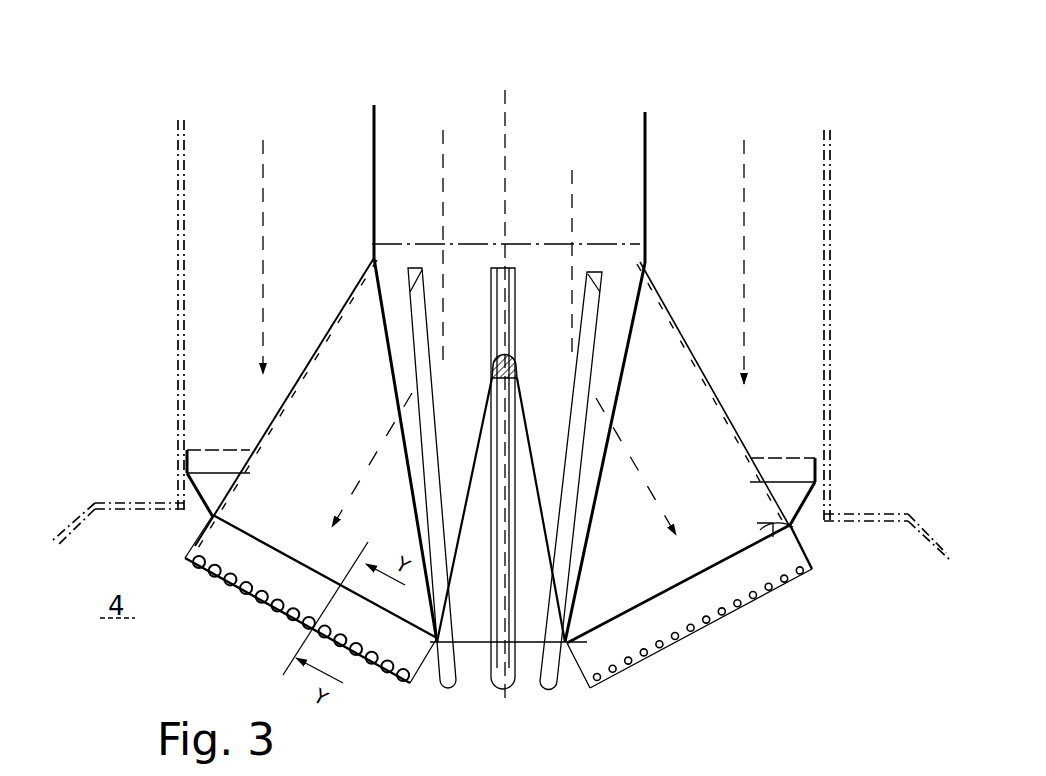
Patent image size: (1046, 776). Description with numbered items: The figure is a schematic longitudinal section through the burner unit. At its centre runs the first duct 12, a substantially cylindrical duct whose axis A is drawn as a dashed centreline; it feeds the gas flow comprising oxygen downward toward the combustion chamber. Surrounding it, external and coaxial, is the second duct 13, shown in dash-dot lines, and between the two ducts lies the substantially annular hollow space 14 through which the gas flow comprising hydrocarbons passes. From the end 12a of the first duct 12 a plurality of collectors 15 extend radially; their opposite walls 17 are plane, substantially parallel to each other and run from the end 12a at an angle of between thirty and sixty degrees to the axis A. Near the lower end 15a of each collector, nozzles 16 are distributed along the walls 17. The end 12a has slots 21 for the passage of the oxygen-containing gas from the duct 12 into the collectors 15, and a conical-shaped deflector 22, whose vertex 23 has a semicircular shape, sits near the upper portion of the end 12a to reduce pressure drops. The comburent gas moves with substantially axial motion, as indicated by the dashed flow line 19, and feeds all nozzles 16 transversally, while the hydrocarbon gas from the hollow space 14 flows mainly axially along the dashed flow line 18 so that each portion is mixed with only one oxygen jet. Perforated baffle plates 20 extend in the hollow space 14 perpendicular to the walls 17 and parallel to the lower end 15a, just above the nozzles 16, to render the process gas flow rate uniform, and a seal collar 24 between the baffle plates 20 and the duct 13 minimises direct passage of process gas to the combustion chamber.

The first duct 12 is at (648, 200).
The end of the first duct 12a is at (374, 258).
The second duct 13 is at (831, 222).
The annular hollow space 14 is at (228, 240).
The collectors 15 is at (790, 550).
The lower end of the collectors 15a is at (690, 640).
The nozzles 16 is at (772, 595).
The opposite walls of the collectors 17 is at (663, 305).
The dashed flow line 18 is at (265, 172).
The dashed flow line 19 is at (443, 157).
The perforated baffle plates 20 is at (793, 527).
The slots 21 is at (415, 325).
The conical-shaped deflector 22 is at (486, 405).
The vertex of the conical-shaped deflector 23 is at (516, 365).
The seal collar 24 is at (800, 468).
The axis of the duct A is at (505, 132).